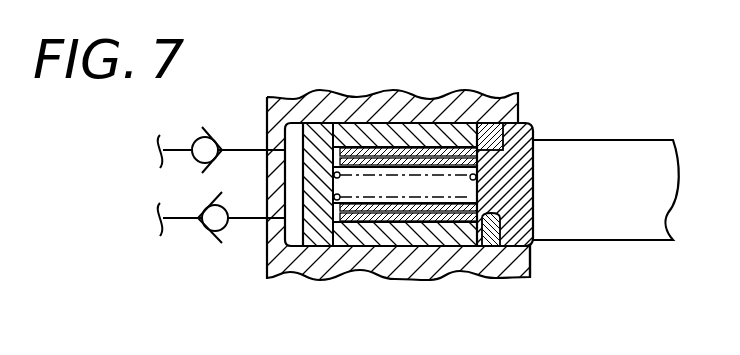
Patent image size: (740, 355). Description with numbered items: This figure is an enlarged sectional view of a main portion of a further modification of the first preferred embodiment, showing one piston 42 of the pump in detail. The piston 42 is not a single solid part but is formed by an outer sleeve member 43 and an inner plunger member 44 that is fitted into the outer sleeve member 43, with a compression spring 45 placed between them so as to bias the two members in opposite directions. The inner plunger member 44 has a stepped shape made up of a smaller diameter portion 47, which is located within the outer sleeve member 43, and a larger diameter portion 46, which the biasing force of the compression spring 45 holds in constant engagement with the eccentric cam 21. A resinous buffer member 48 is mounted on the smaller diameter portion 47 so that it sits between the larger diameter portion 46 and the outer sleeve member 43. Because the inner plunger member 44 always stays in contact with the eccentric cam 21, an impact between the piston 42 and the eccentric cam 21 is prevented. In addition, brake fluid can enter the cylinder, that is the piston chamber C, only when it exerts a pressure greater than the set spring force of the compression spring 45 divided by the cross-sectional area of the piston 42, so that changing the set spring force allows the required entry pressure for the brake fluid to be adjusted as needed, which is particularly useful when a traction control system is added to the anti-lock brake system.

The piston 42 is at (522, 88).
The piston chamber C is at (291, 123).
The compression spring 45 is at (324, 123).
The outer sleeve member 43 is at (366, 123).
The resinous buffer member 48 is at (491, 123).
The larger diameter portion 46 is at (537, 147).
The smaller diameter portion 47 is at (486, 257).
The inner plunger member 44 is at (523, 253).
The eccentric cam 21 is at (625, 152).